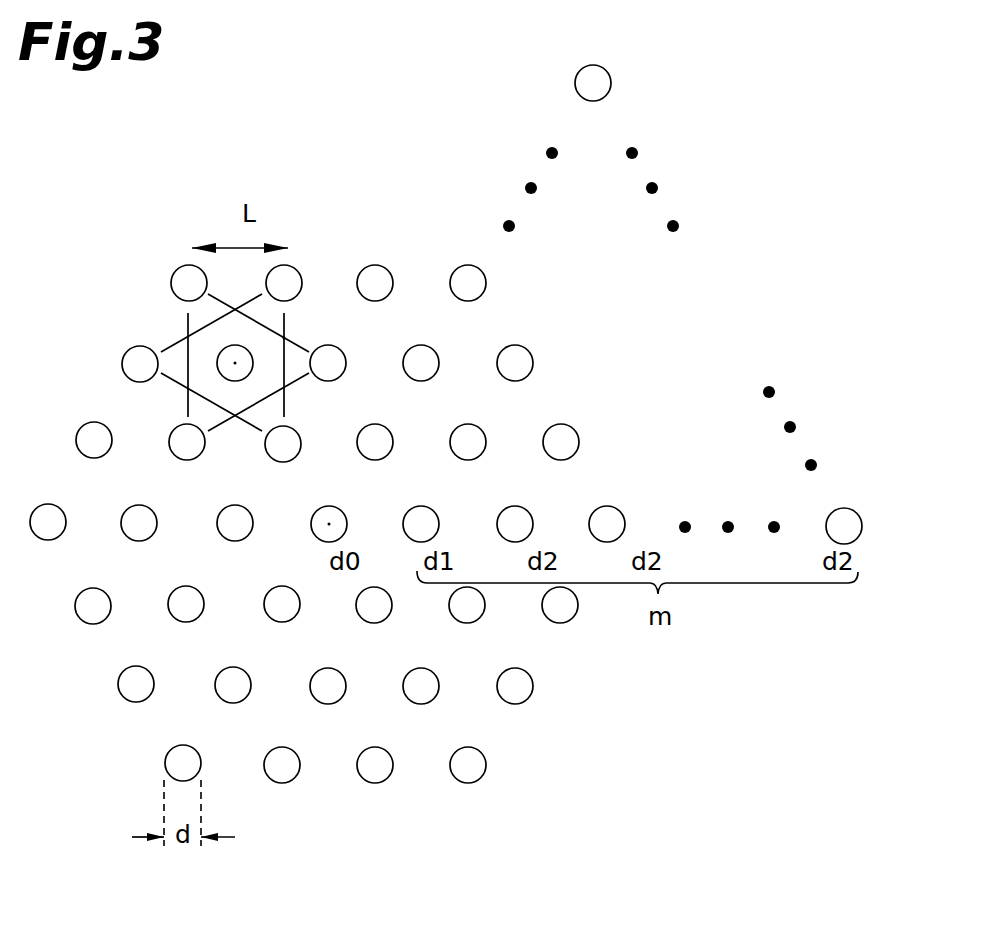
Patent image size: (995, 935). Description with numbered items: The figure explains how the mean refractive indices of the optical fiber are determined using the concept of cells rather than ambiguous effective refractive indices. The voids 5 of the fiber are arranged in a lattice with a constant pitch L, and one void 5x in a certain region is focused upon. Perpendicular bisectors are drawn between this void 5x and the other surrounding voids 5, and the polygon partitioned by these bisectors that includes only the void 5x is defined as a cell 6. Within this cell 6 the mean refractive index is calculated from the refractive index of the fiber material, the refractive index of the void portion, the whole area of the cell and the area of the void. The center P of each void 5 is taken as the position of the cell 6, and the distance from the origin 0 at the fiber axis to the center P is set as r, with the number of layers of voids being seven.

The void 5 is at (142, 364).
The focused void 5x is at (234, 362).
The cell 6 is at (290, 383).
The center of void P is at (287, 338).
The origin 0 is at (329, 524).